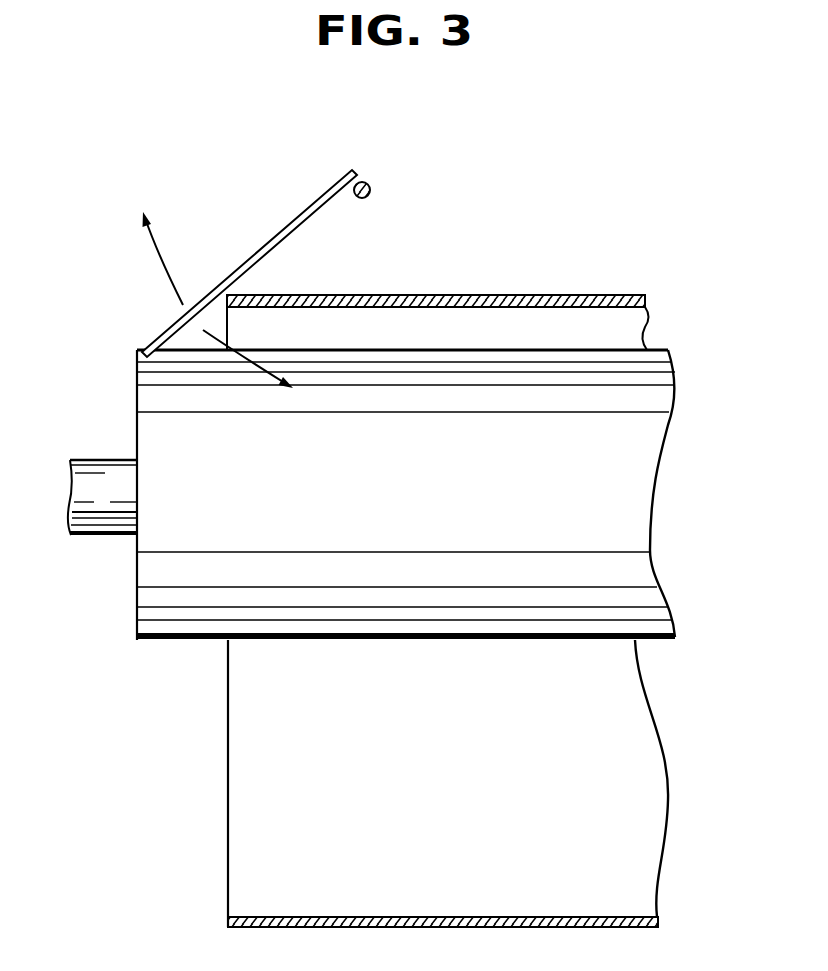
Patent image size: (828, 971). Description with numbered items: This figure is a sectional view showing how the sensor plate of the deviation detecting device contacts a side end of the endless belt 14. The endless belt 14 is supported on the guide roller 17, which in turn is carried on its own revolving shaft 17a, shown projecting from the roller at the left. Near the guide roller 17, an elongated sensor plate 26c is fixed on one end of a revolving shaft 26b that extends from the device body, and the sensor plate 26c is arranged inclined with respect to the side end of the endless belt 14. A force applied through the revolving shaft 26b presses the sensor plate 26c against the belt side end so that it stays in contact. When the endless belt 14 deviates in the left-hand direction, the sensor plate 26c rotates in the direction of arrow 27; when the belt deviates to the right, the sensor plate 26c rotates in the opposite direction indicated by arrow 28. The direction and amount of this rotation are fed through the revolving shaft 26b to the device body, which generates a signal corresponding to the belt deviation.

The endless belt 14 is at (560, 295).
The guide roller 17 is at (637, 510).
The revolving shaft 17a is at (95, 538).
The revolving shaft 26b is at (370, 194).
The sensor plate 26c is at (245, 263).
The arrow 27 is at (152, 260).
The arrow 28 is at (247, 350).